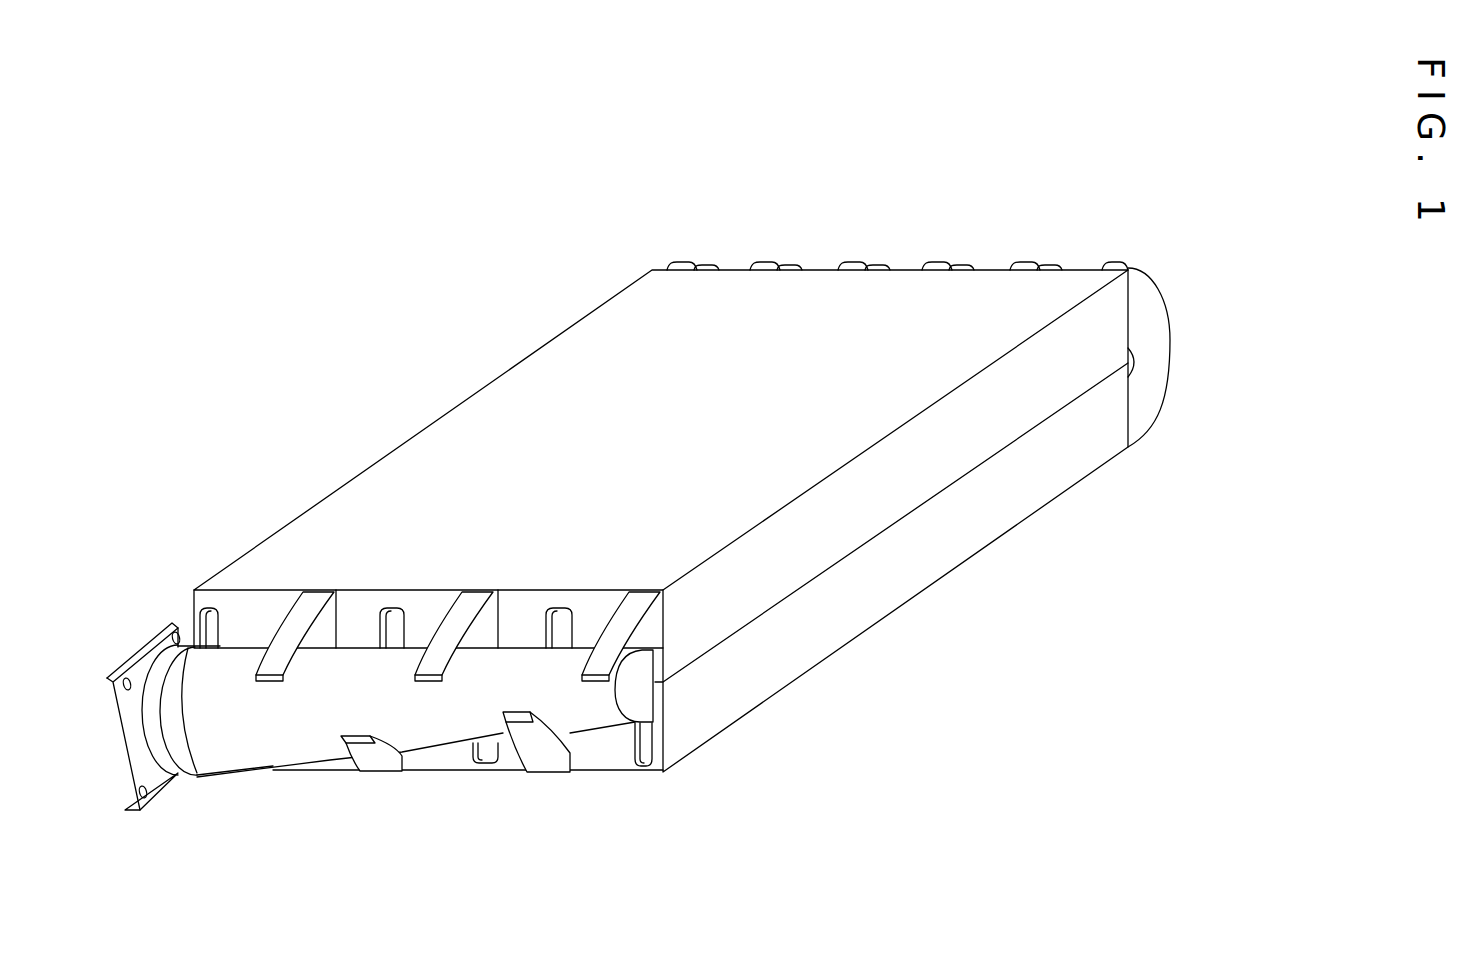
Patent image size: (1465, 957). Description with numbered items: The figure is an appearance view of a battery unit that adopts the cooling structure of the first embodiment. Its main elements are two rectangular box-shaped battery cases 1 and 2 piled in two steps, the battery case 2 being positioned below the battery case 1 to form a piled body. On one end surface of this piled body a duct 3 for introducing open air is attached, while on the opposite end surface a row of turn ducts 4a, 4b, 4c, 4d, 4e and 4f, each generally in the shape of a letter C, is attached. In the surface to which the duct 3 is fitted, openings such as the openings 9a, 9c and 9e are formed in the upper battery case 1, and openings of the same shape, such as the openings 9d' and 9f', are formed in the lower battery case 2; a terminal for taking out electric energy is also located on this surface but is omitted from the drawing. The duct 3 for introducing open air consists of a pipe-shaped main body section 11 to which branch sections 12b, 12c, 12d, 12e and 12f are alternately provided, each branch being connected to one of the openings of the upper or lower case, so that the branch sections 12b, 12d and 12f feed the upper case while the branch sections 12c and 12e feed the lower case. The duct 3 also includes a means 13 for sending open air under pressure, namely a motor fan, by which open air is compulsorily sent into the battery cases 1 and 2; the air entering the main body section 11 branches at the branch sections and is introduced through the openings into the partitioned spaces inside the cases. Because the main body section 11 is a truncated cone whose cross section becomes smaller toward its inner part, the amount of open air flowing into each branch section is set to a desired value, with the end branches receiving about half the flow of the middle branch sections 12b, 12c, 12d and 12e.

The battery case 1 is at (450, 430).
The battery case 2 is at (838, 650).
The duct for introducing open air 3 is at (327, 768).
The turn duct 4a is at (692, 262).
The turn duct 4b is at (774, 262).
The turn duct 4c is at (862, 262).
The turn duct 4d is at (955, 262).
The turn duct 4e is at (1037, 262).
The turn duct 4f is at (1130, 268).
The opening 9a is at (214, 612).
The opening 9c is at (392, 612).
The opening 9e is at (562, 610).
The opening 9d' is at (484, 790).
The opening 9f' is at (644, 783).
The main body section 11 is at (282, 747).
The branch section 12b is at (308, 604).
The branch section 12c is at (375, 752).
The branch section 12d is at (472, 602).
The branch section 12e is at (538, 758).
The branch section 12f is at (632, 604).
The means for sending open air under pressure 13 is at (163, 765).